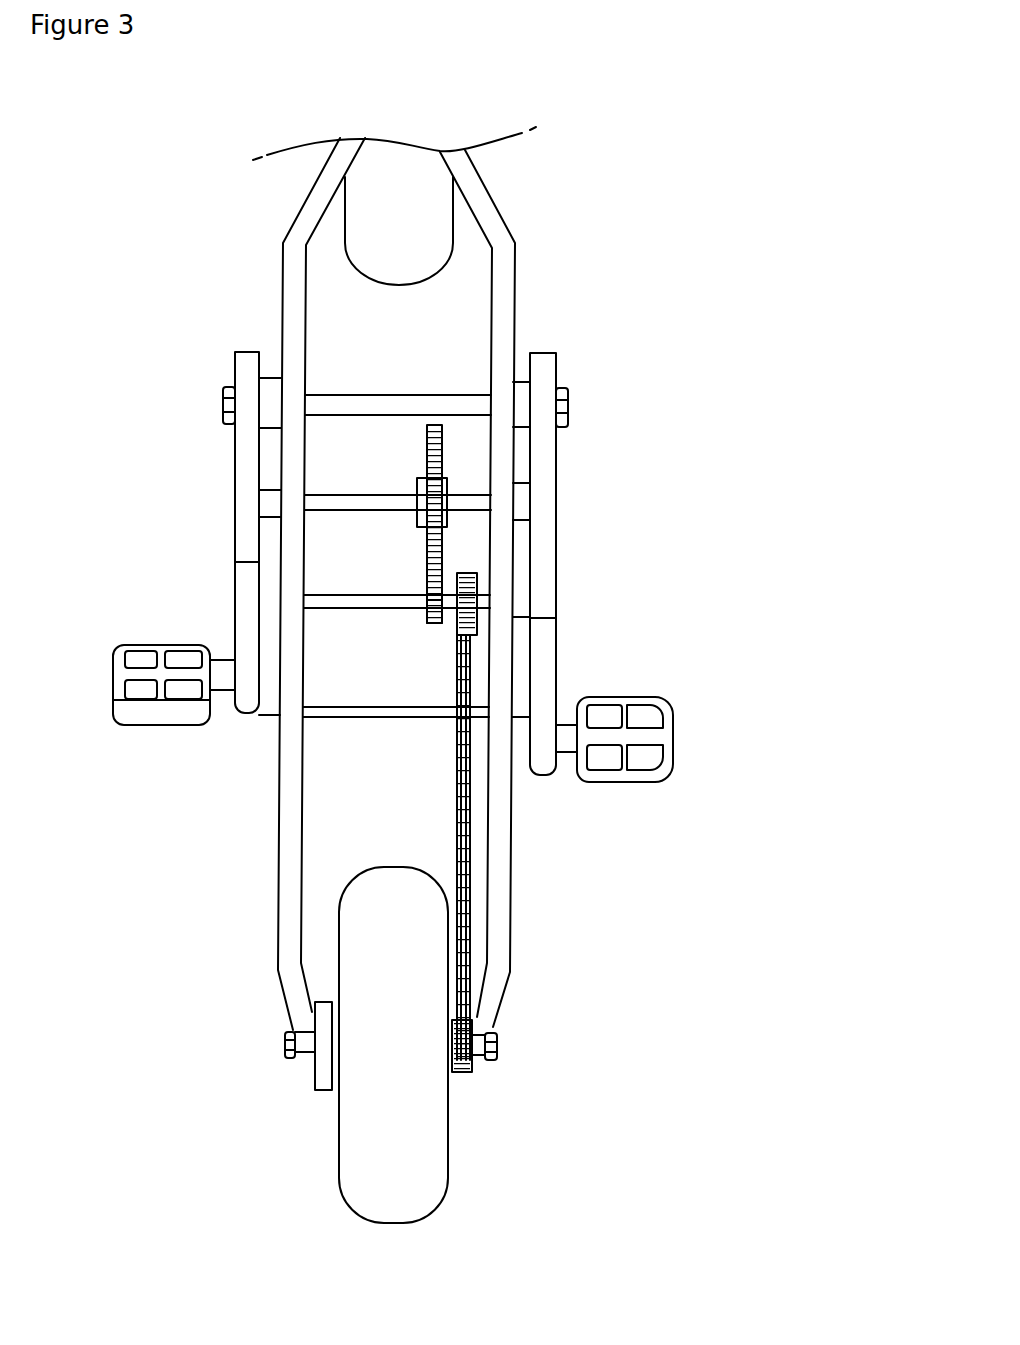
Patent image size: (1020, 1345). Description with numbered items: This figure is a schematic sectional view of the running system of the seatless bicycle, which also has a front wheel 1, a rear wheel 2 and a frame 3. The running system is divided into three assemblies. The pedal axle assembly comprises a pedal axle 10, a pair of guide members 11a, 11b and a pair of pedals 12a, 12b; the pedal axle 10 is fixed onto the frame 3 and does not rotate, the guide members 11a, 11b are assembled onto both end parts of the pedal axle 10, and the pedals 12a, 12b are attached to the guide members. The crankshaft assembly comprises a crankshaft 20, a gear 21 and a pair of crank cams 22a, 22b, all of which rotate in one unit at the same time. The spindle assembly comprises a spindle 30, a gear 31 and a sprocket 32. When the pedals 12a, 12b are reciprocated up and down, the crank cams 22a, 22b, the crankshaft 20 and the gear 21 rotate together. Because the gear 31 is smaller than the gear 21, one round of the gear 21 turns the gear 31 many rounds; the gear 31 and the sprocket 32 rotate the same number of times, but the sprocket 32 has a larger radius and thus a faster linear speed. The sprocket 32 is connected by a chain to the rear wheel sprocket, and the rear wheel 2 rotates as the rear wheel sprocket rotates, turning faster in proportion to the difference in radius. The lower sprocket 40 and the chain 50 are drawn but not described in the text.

The front wheel 1 is at (430, 213).
The rear wheel 2 is at (418, 1162).
The frame 3 is at (507, 275).
The pedal axle 10 is at (463, 403).
The guide member 11a is at (547, 447).
The guide member 11b is at (248, 448).
The pedal 12a is at (663, 735).
The pedal 12b is at (143, 715).
The crankshaft 20 is at (355, 503).
The gear 21 is at (425, 433).
The crank cam 22a is at (540, 500).
The crank cam 22b is at (268, 503).
The spindle 30 is at (322, 603).
The gear 31 is at (433, 627).
The sprocket 32 is at (477, 600).
The wheel sprocket 40 is at (472, 1037).
The chain 50 is at (468, 862).